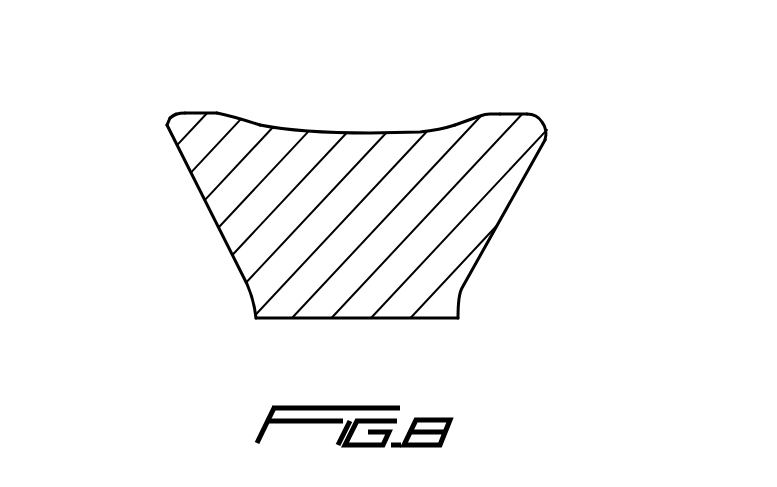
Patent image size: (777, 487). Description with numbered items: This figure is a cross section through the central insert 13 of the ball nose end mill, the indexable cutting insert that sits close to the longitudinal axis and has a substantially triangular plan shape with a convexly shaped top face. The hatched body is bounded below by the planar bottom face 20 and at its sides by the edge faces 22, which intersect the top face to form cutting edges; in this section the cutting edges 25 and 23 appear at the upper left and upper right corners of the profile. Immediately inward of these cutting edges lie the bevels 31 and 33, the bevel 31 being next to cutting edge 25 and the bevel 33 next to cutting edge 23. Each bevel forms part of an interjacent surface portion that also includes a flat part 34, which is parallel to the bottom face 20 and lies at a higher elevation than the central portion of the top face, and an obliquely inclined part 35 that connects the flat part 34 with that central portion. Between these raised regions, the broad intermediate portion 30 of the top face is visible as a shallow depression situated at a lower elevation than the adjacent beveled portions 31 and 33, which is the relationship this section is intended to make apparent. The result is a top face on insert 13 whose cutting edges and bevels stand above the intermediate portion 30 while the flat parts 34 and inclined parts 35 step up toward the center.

The central insert 13 is at (439, 92).
The bottom face 20 is at (411, 318).
The edge faces 22 is at (207, 214).
The cutting edge 23 is at (547, 130).
The cutting edge 25 is at (167, 125).
The intermediate portion 30 is at (392, 132).
The bevel 31 is at (543, 122).
The bevel 33 is at (170, 115).
The flat part 34 is at (200, 113).
The obliquely inclined part 35 is at (230, 115).